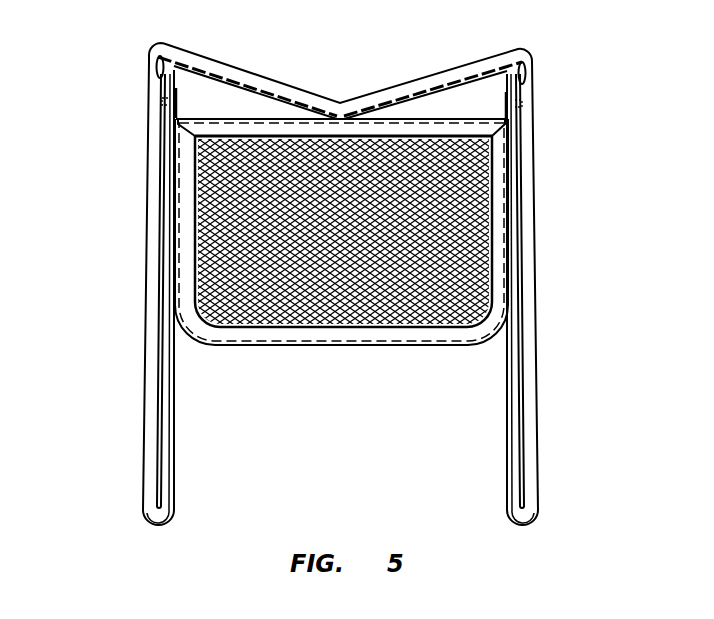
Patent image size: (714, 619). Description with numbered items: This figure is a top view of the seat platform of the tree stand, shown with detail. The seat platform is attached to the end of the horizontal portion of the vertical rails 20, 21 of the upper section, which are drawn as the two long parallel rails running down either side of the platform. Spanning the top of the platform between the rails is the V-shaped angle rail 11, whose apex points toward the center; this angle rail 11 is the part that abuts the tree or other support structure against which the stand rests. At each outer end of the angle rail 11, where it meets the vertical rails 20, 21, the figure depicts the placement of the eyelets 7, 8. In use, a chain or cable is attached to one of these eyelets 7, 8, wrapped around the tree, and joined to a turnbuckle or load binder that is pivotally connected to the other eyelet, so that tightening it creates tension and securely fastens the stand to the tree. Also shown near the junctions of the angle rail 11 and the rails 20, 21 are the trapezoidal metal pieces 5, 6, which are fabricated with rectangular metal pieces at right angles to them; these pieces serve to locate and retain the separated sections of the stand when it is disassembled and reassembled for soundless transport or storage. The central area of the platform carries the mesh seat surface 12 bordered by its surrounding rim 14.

The trapezoidal metal piece 5 is at (503, 100).
The trapezoidal metal piece 6 is at (179, 100).
The eyelet 7 is at (150, 68).
The eyelet 8 is at (531, 72).
The V-shaped angle rail 11 is at (415, 80).
The mesh screen 12 is at (372, 300).
The bag rim 14 is at (228, 345).
The vertical rail of the upper section 20 is at (146, 338).
The vertical rail of the upper section 21 is at (538, 338).